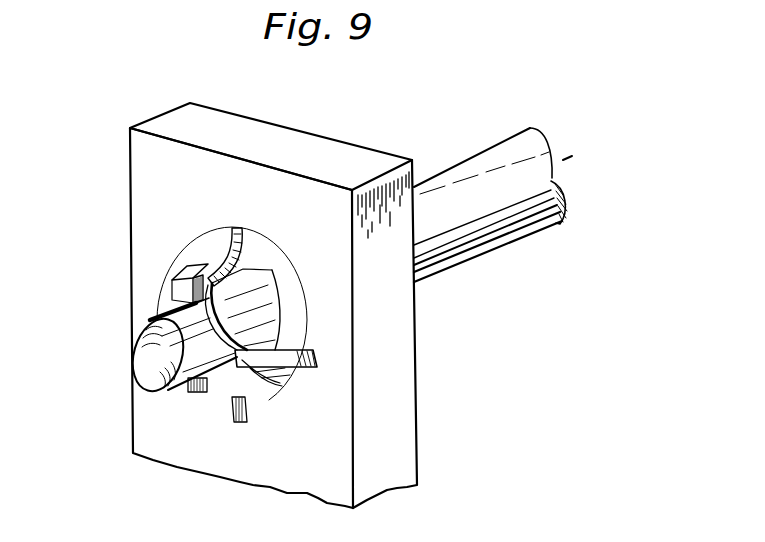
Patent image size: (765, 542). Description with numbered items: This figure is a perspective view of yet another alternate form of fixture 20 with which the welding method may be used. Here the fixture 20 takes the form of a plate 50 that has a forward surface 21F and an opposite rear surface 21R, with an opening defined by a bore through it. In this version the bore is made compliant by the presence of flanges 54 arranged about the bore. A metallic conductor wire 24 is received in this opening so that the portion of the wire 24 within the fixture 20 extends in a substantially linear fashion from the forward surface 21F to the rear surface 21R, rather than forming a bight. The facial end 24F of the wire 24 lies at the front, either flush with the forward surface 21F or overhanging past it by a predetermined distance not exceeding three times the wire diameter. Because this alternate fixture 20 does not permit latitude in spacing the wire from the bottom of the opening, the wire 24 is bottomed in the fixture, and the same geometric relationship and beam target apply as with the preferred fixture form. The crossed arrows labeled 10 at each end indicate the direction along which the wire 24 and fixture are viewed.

The terminal fixture 20 is at (234, 287).
The forward surface 21F is at (147, 164).
The rear surface 21R is at (397, 108).
The plate 50 is at (237, 130).
The conductor wire 24 is at (157, 338).
The facial end 24F is at (113, 335).
The flanges 54 is at (175, 290).
The direction of movement / rail 10 is at (657, 160).